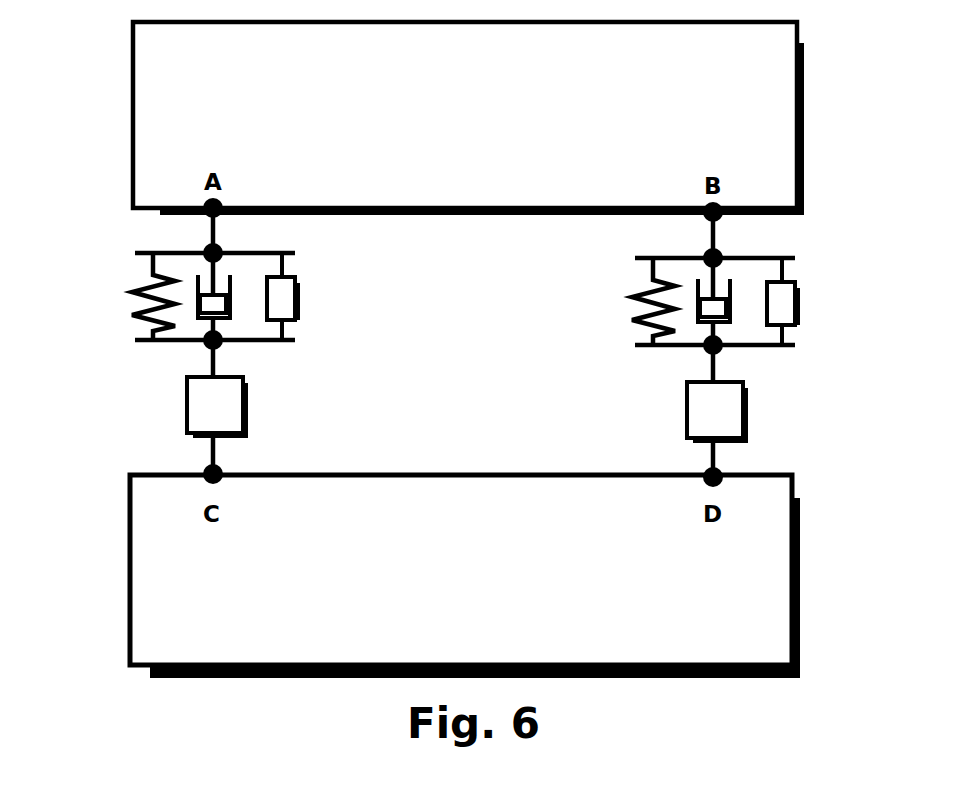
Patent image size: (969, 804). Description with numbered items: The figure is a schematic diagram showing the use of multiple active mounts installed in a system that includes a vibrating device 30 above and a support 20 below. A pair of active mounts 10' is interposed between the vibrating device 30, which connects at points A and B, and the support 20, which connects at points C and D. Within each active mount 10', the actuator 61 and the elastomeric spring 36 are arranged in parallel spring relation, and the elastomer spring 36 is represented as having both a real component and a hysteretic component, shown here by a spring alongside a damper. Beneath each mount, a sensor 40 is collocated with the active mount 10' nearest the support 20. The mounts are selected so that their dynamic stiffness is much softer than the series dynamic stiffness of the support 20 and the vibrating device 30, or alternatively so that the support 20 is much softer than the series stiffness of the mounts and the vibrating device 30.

The vibrating device 30 is at (730, 134).
The support 20 is at (728, 590).
The elastomeric spring 36 is at (150, 273).
The actuator 61 is at (300, 297).
The sensor 40 is at (248, 400).
The active mount 10' is at (415, 373).